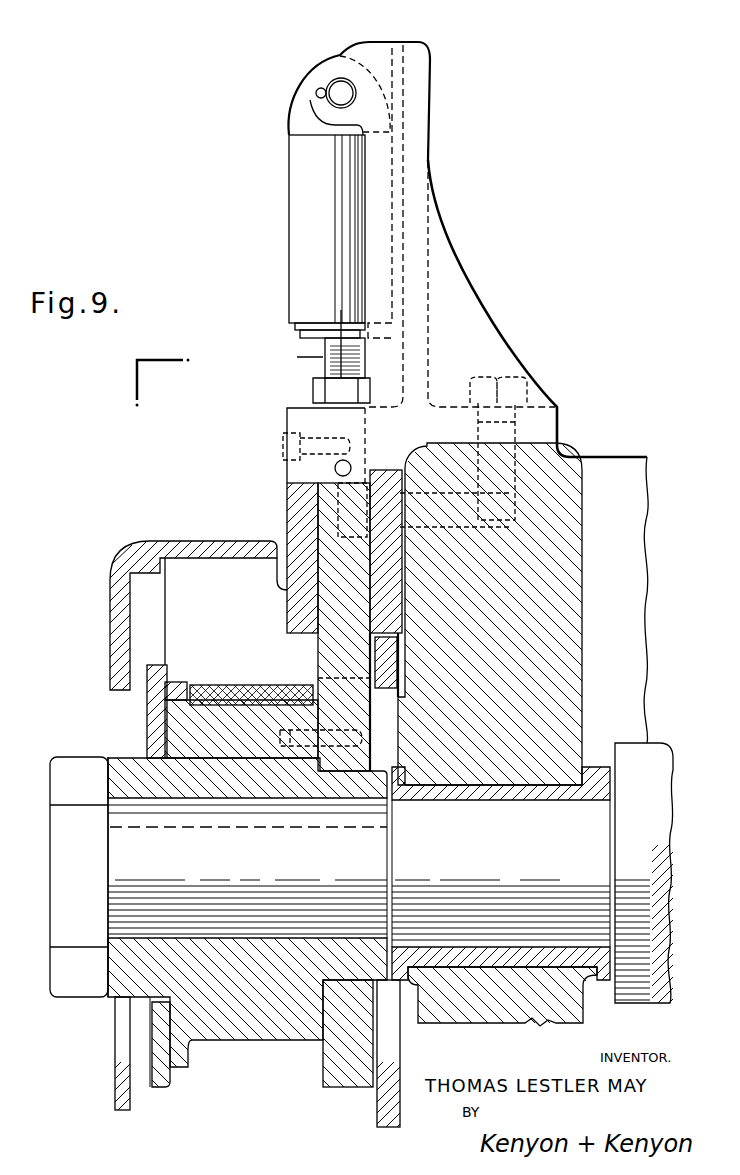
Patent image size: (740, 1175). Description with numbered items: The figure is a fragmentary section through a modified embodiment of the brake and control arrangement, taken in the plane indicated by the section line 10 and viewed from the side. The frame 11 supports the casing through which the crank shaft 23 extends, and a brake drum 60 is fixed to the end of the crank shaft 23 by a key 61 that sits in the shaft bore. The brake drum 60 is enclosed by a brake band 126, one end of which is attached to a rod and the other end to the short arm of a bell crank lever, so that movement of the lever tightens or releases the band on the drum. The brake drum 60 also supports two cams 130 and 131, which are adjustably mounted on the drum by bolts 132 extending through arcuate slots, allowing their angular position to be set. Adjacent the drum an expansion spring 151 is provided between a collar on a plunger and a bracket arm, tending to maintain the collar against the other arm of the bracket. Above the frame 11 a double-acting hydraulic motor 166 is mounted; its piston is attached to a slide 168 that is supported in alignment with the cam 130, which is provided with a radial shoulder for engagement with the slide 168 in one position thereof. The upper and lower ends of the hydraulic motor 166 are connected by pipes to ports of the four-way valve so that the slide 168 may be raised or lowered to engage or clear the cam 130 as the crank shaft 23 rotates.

The section line 10- 10 is at (341, 8).
The frame 11 is at (560, 500).
The crank shaft 23 is at (490, 900).
The brake drum 60 is at (122, 770).
The key 61 is at (238, 805).
The brake band 126 is at (232, 652).
The cam 130 is at (342, 1080).
The cam 131 is at (165, 1090).
The bolts 132 is at (382, 730).
The expansion spring 151 is at (203, 540).
The double-acting hydraulic motor 166 is at (300, 193).
The slide 168 is at (335, 641).